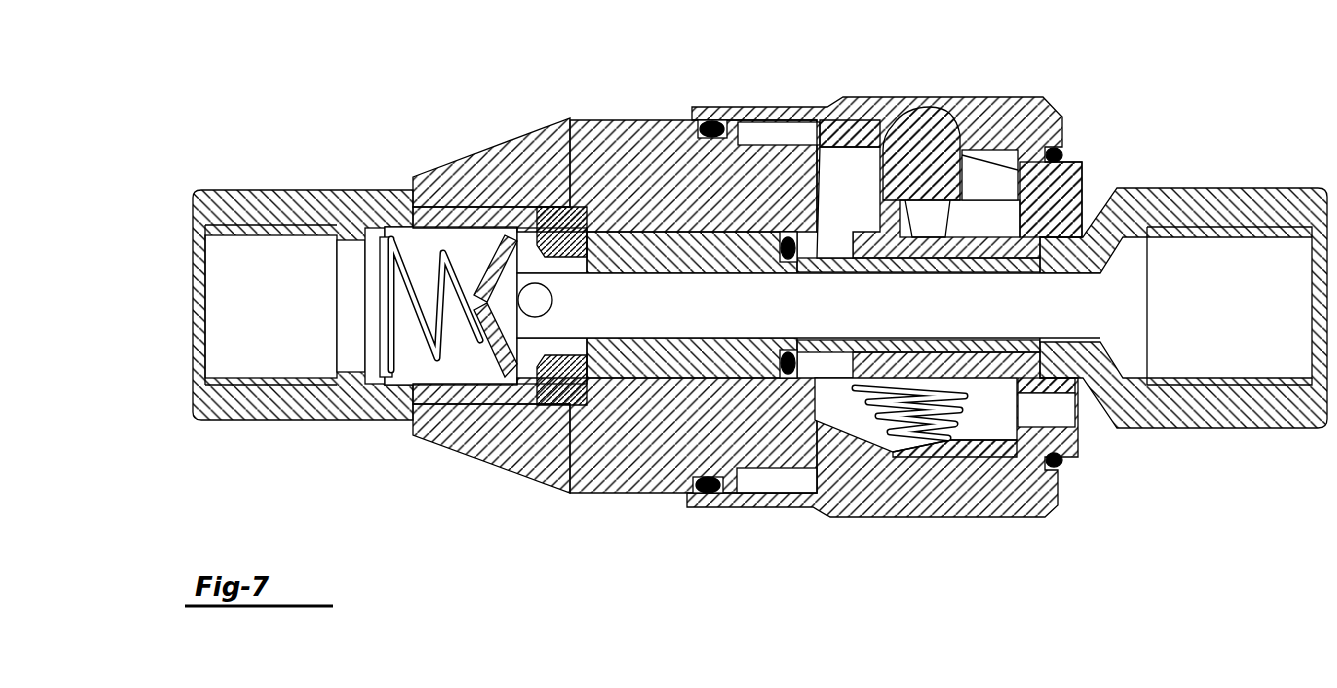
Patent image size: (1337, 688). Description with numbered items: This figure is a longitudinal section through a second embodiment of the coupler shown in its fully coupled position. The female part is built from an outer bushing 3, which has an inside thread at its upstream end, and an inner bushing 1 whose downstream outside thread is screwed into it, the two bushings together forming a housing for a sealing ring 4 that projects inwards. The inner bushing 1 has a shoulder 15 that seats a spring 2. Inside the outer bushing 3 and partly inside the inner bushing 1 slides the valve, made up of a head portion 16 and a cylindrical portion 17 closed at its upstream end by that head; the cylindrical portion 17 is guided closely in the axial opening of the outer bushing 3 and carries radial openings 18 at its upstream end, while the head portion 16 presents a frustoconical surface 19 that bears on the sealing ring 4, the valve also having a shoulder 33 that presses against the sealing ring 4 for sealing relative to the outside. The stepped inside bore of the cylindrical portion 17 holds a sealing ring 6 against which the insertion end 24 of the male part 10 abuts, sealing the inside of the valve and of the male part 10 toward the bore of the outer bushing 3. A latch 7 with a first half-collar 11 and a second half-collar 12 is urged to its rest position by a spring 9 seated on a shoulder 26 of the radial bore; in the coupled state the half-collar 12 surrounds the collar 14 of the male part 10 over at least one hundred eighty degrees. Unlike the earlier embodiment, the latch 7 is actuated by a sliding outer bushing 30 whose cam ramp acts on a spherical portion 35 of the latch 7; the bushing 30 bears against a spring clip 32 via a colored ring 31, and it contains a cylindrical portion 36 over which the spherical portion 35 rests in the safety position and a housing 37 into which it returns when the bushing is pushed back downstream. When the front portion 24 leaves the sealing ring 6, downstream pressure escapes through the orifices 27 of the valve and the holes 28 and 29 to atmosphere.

The inner bushing 1 is at (300, 200).
The spring 2 is at (385, 235).
The outer bushing 3 is at (635, 130).
The sealing ring 4 is at (510, 190).
The sealing ring 6 is at (795, 240).
The latch 7 is at (932, 245).
The spring 9 is at (945, 450).
The male part 10 is at (1178, 190).
The first half-collar 11 is at (985, 220).
The second half-collar 12 is at (930, 430).
The collar 14 is at (905, 145).
The shoulder 15 is at (372, 378).
The head portion 16 is at (418, 432).
The cylindrical portion 17 is at (645, 378).
The radial openings 18 is at (480, 312).
The frustoconical surface 19 is at (470, 235).
The insertion end 24 is at (785, 312).
The shoulder 26 is at (960, 355).
The radial openings 27 is at (815, 432).
The opening 28 is at (900, 460).
The bore 29 is at (1078, 410).
The outer bushing 30 is at (840, 120).
The ring 31 is at (1006, 110).
The spring clip 32 is at (1062, 155).
The shoulder 33 is at (568, 228).
The spherical portion 35 is at (865, 135).
The cylindrical portion 36 is at (1015, 480).
The housing 37 is at (905, 495).